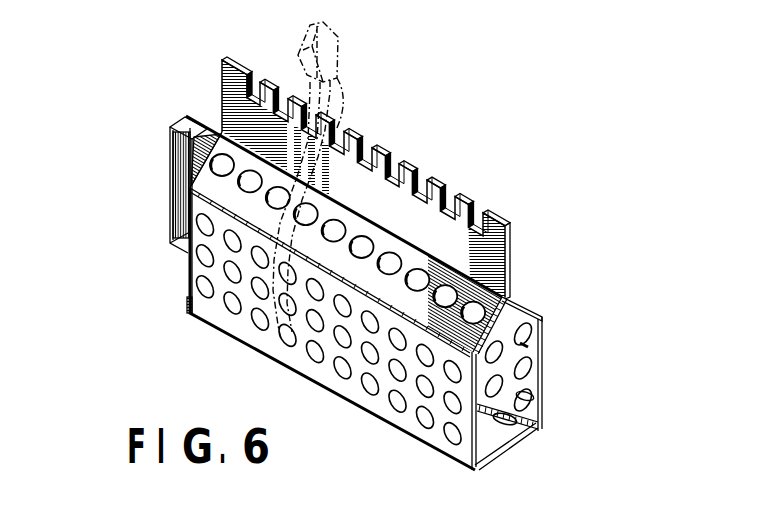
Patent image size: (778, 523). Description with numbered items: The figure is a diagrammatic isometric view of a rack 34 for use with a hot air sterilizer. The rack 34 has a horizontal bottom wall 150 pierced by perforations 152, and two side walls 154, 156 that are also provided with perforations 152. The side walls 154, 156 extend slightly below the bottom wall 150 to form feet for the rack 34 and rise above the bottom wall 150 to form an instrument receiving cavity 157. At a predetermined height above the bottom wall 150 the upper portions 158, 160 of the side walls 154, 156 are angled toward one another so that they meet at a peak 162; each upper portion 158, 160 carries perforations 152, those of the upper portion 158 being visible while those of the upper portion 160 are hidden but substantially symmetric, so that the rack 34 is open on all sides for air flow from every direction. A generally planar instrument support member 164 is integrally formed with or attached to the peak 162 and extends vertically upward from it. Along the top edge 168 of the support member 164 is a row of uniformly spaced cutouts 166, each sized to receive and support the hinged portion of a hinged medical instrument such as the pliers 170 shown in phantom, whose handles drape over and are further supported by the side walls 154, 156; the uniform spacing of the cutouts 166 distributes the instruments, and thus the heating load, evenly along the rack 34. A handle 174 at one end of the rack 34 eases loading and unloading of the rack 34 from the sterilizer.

The rack 34 is at (216, 78).
The horizontal bottom wall 150 is at (504, 428).
The perforations 152 is at (243, 187).
The side wall 154 is at (447, 417).
The side wall 156 is at (543, 372).
The instrument receiving cavity 157 is at (525, 346).
The upper portion of side wall 158 is at (480, 262).
The upper portion of side wall 160 is at (523, 304).
The peak 162 is at (504, 295).
The instrument support member 164 is at (510, 248).
The cutouts 166 is at (473, 208).
The top edge 168 is at (493, 213).
The pliers 170 is at (345, 58).
The handle 174 is at (186, 116).